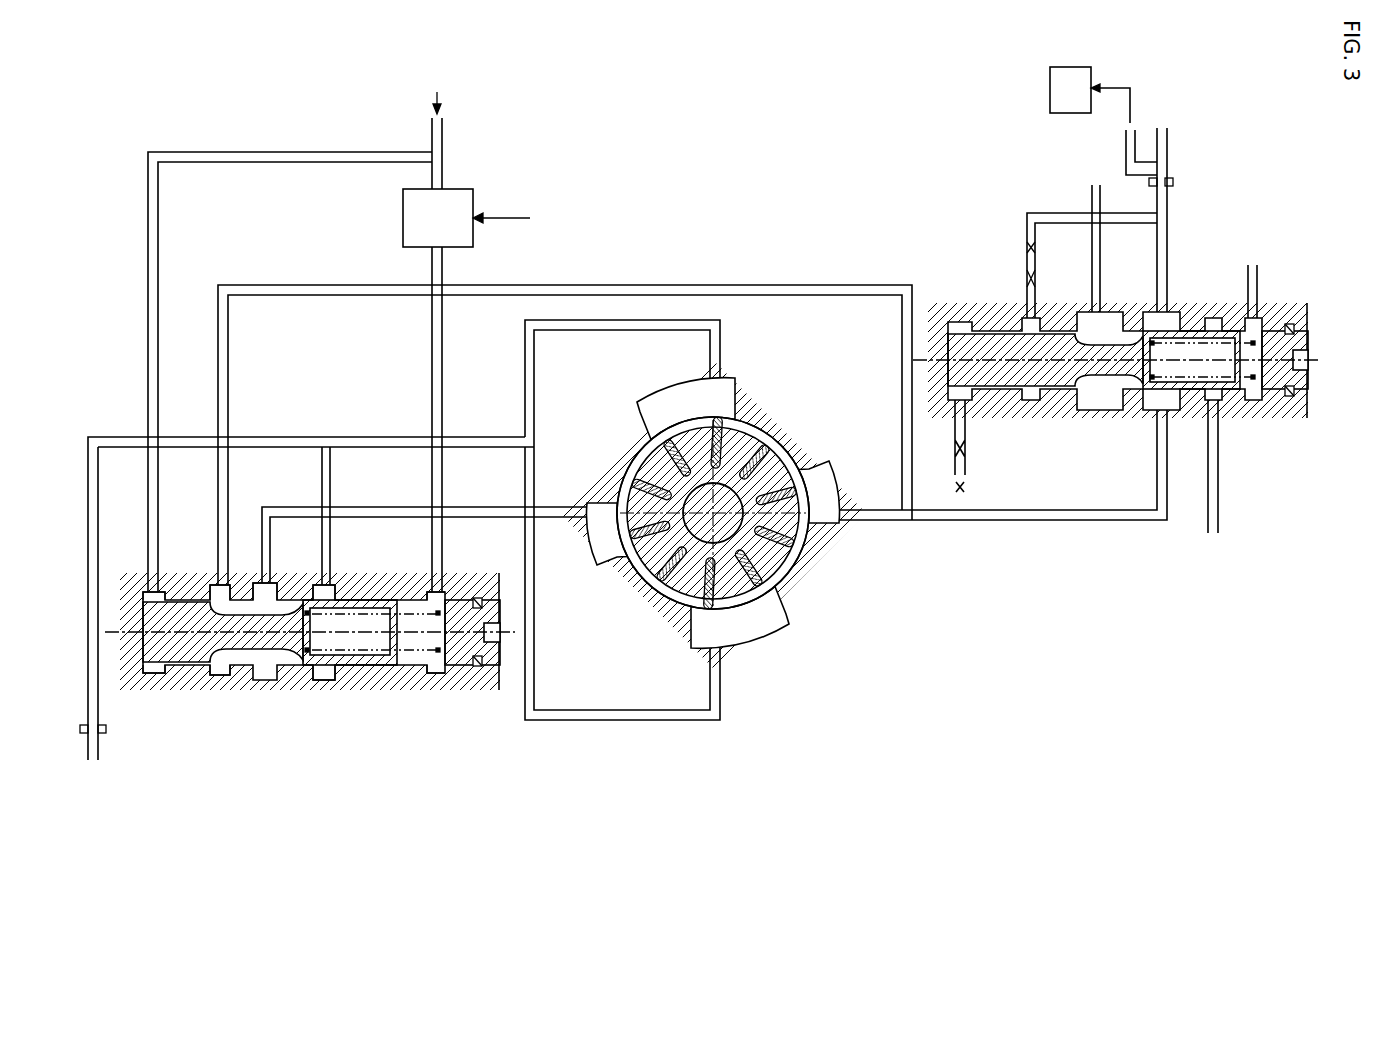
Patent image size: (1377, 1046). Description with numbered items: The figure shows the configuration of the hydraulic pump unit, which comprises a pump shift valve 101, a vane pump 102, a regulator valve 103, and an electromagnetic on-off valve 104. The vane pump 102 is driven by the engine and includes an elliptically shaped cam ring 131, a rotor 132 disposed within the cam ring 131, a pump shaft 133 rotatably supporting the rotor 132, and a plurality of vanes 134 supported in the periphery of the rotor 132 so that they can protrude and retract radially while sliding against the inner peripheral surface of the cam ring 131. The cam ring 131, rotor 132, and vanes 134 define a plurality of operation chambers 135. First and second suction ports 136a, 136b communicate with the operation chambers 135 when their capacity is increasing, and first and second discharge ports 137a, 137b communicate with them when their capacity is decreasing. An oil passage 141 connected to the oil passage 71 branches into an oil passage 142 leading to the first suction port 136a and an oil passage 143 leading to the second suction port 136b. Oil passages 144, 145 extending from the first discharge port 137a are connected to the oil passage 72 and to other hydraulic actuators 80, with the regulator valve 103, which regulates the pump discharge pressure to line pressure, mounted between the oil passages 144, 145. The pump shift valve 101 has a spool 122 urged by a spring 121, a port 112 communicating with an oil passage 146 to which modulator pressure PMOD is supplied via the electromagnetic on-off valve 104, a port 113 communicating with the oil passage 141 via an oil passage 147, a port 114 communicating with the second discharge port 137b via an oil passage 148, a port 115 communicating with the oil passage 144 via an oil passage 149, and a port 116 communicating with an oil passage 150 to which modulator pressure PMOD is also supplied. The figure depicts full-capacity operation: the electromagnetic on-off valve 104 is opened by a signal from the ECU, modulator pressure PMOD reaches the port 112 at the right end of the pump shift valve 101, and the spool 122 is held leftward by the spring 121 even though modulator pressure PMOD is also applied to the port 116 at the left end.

The oil passage 71 is at (98, 745).
The oil passage 72 is at (1170, 135).
The other hydraulic actuators 80 is at (1050, 90).
The pump shift valve 101 is at (309, 649).
The vane pump 102 is at (734, 504).
The regulator valve 103 is at (1100, 438).
The electromagnetic on-off valve 104 is at (403, 193).
The port 112 is at (418, 592).
The port 113 is at (335, 585).
The port 114 is at (290, 583).
The port 115 is at (208, 585).
The port 116 is at (137, 585).
The spring 121 is at (325, 665).
The spool 122 is at (268, 650).
The cam ring 131 is at (658, 638).
The rotor 132 is at (745, 425).
The pump shaft 133 is at (780, 584).
The vanes 134 is at (708, 425).
The operation chambers 135 is at (640, 583).
The first suction port 136a is at (663, 393).
The second suction port 136b is at (778, 640).
The first discharge port 137a is at (828, 522).
The second discharge port 137b is at (600, 483).
The oil passage 141 is at (290, 437).
The oil passage 142 is at (525, 388).
The oil passage 143 is at (525, 552).
The oil passage 144 is at (1040, 520).
The oil passage 145 is at (1160, 208).
The oil passage 146 is at (432, 355).
The oil passage 147 is at (330, 478).
The oil passage 148 is at (486, 507).
The oil passage 149 is at (318, 285).
The oil passage 150 is at (148, 310).